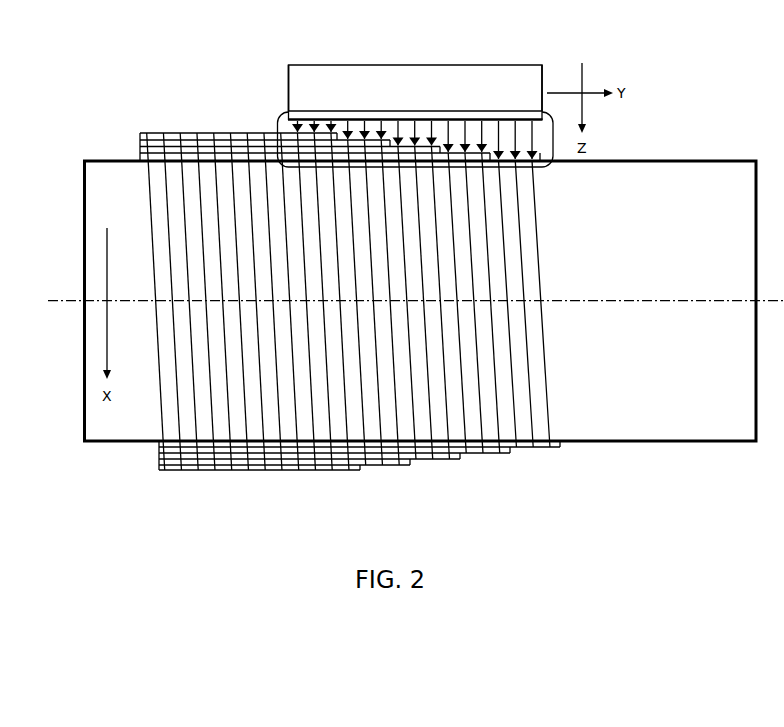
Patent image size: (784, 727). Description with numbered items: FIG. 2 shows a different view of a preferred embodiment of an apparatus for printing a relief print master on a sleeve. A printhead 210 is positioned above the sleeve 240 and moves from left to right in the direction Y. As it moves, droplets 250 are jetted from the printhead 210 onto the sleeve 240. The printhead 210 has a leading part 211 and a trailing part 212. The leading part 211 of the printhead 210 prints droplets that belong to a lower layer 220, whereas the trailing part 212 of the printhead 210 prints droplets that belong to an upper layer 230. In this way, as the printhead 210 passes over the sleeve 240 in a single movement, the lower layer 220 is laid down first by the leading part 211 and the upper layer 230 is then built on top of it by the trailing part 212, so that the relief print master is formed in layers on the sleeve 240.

The printhead 210 is at (403, 83).
The leading part 211 is at (542, 83).
The trailing part 212 is at (286, 90).
The lower layer 220 is at (540, 448).
The upper layer 230 is at (182, 467).
The sleeve 240 is at (665, 160).
The droplets 250 is at (277, 123).